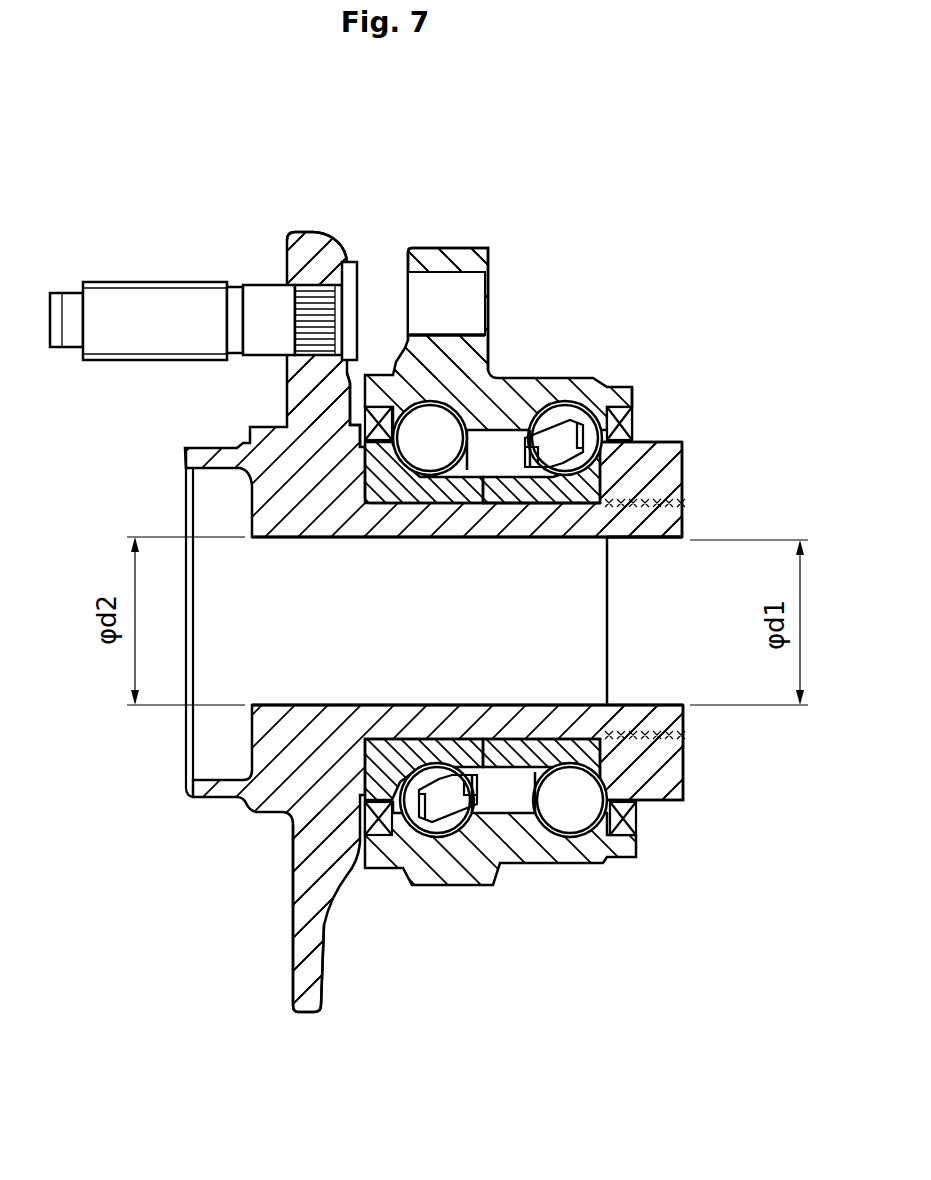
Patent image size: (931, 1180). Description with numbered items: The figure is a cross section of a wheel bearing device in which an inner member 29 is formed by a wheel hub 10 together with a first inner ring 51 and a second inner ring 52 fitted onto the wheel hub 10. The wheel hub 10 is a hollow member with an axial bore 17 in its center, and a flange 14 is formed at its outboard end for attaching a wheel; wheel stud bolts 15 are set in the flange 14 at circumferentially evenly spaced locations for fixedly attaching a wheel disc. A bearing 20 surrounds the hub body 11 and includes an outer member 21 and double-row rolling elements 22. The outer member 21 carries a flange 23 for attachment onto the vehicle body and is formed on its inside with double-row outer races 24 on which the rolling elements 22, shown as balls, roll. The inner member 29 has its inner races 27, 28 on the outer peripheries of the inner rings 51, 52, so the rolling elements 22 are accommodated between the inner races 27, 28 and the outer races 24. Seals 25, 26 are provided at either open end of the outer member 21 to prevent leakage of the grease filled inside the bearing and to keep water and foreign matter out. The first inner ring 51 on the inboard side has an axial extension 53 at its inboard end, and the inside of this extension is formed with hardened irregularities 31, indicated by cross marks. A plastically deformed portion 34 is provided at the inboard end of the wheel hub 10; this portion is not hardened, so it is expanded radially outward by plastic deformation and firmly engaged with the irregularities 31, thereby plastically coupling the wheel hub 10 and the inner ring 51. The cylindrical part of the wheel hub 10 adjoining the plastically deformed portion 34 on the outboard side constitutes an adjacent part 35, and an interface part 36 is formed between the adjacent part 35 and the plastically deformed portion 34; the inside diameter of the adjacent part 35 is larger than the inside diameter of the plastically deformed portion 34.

The wheel hub 10 is at (184, 468).
The hub wheel 11 is at (507, 497).
The flange 14 is at (300, 232).
The wheel stud bolt 15 is at (152, 282).
The bore of hub wheel 17 is at (432, 642).
The bearing 20 is at (545, 372).
The outer member 21 is at (448, 350).
The rolling elements 22 is at (450, 826).
The flange of outer member 23 is at (450, 260).
The outer races 24 is at (393, 407).
The seal 25 is at (362, 432).
The seal 26 is at (632, 423).
The inner race 27 is at (423, 455).
The inner race 28 is at (562, 465).
The inner member 29 is at (684, 462).
The hardened irregularities 31 is at (655, 712).
The plastically deformed portion 34 is at (655, 532).
The adjacent part 35 is at (527, 522).
The interface part 36 is at (608, 543).
The first inner ring 51 is at (565, 750).
The second inner ring 52 is at (385, 748).
The axial extension 53 is at (663, 452).